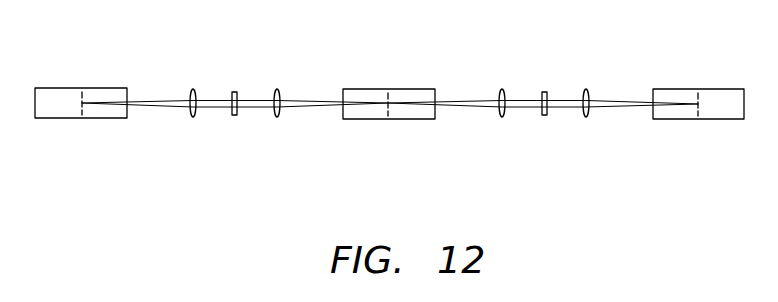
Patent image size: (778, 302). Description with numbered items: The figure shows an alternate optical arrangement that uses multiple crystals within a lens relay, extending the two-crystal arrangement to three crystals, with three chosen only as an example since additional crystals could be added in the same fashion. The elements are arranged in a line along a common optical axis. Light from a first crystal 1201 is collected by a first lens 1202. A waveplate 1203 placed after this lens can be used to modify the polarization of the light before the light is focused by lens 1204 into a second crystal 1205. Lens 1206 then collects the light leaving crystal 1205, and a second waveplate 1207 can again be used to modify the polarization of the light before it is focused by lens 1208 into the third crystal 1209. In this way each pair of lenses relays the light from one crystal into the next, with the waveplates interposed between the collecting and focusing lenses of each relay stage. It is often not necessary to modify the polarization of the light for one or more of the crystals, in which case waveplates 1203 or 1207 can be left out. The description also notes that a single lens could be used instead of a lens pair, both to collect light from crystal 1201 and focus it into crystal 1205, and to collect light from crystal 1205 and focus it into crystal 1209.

The first crystal 1201 is at (82, 118).
The first lens 1202 is at (193, 89).
The waveplate 1203 is at (234, 117).
The lens 1204 is at (277, 89).
The second crystal 1205 is at (388, 120).
The lens 1206 is at (502, 89).
The waveplate 1207 is at (544, 118).
The lens 1208 is at (586, 89).
The crystal 1209 is at (698, 120).